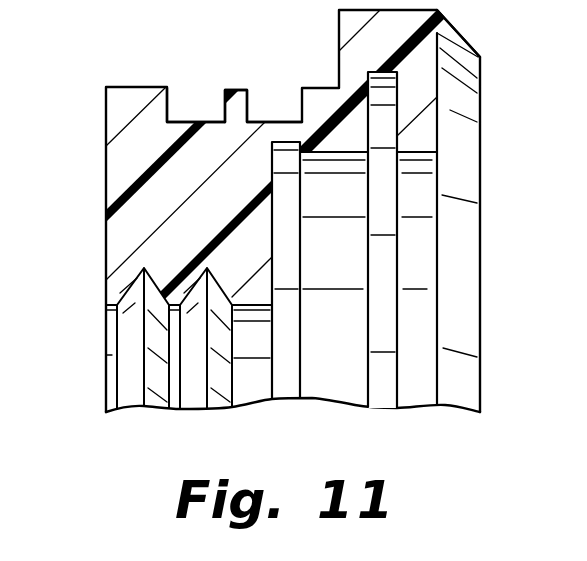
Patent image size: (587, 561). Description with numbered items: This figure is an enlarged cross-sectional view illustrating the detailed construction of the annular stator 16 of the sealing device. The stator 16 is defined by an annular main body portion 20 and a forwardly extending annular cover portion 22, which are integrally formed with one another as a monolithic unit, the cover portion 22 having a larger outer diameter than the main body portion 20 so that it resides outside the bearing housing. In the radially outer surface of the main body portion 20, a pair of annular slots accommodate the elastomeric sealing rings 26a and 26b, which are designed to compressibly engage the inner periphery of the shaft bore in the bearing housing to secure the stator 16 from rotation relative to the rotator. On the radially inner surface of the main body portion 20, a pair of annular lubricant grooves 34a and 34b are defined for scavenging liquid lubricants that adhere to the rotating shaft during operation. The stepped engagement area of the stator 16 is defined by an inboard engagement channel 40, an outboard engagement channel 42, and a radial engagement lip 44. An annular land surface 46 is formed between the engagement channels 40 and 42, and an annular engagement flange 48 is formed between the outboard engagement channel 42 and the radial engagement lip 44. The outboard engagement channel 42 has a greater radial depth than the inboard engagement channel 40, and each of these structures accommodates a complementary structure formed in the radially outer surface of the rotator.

The annular stator 16 is at (86, 132).
The annular main body portion 20 is at (138, 213).
The forwardly extending annular cover portion 22 is at (368, 43).
The elastomeric sealing ring 26a is at (195, 121).
The elastomeric sealing ring 26b is at (267, 121).
The annular lubricant groove 34a is at (130, 390).
The annular lubricant groove 34b is at (192, 387).
The inboard engagement channel 40 is at (283, 365).
The outboard engagement channel 42 is at (383, 372).
The radial engagement lip 44 is at (467, 38).
The annular land surface 46 is at (338, 343).
The annular engagement flange 48 is at (418, 133).